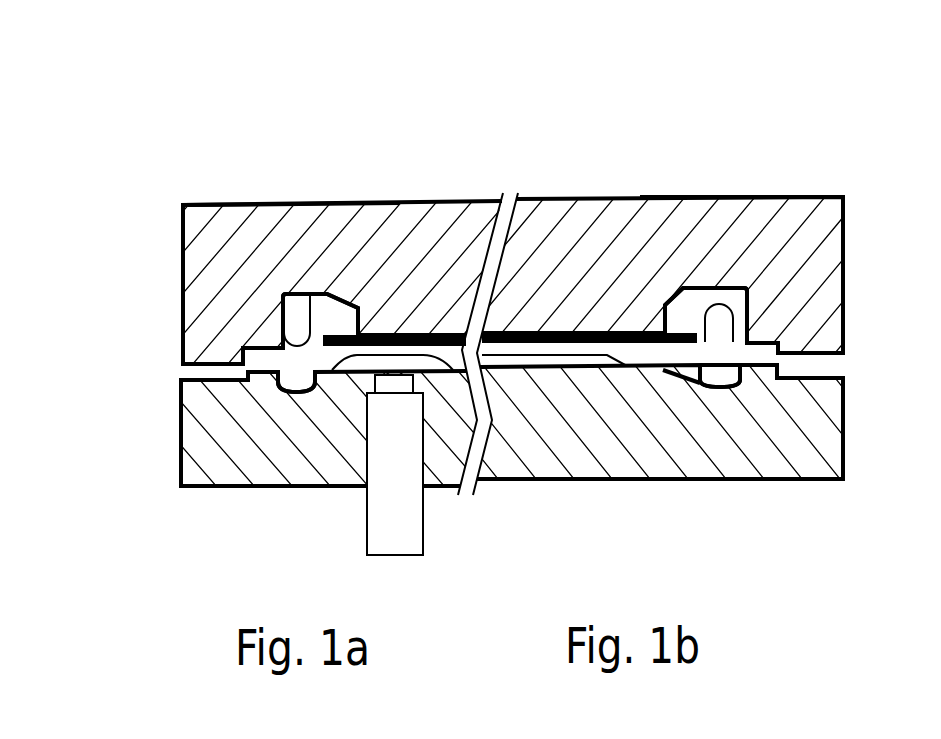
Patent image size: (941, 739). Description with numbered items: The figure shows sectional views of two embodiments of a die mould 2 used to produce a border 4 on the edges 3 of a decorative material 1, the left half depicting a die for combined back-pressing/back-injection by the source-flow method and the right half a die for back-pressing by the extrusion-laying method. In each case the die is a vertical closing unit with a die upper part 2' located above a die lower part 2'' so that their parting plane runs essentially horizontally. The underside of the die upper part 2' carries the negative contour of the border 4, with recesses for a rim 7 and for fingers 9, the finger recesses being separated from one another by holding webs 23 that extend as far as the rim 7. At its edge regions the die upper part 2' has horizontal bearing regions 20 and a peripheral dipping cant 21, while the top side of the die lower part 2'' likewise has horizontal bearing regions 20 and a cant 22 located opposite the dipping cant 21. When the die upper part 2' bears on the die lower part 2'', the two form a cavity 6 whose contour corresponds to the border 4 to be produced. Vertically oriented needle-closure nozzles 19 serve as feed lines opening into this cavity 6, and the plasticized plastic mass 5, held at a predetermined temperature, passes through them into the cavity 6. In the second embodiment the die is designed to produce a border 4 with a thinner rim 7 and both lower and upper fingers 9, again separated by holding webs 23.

In FIG. 1A, the decorative material 1 is at (470, 325).
In FIG. 1B, the decorative material 1 is at (556, 330).
In FIG. 1A, the die mould 2 is at (485, 261).
In FIG. 1A, the die upper part 2' is at (334, 241).
In FIG. 1B, the die upper part 2' is at (660, 235).
In FIG. 1A, the die lower part 2'' is at (337, 459).
In FIG. 1B, the die lower part 2'' is at (661, 364).
In FIG. 1A, the edges 3 is at (284, 293).
In FIG. 1B, the edges 3 is at (668, 302).
In FIG. 1A, the border 4 is at (279, 244).
In FIG. 1B, the border 4 is at (728, 258).
In FIG. 1A, the plasticized plastic mass 5 is at (401, 377).
In FIG. 1B, the plasticized plastic mass 5 is at (546, 362).
In FIG. 1A, the cavity 6 is at (423, 333).
In FIG. 1B, the cavity 6 is at (622, 332).
In FIG. 1A, the rim 7 is at (297, 392).
In FIG. 1B, the rim 7 is at (728, 390).
In FIG. 1A, the fingers 9 is at (342, 312).
In FIG. 1B, the fingers 9 is at (694, 300).
In FIG. 1A, the needle-closure nozzles 19 is at (405, 543).
In FIG. 1A, the horizontal bearing regions 20 is at (230, 354).
In FIG. 1B, the horizontal bearing regions 20 is at (795, 338).
In FIG. 1A, the peripheral dipping cant 21 is at (213, 357).
In FIG. 1B, the peripheral dipping cant 21 is at (800, 350).
In FIG. 1A, the cant 22 is at (253, 393).
In FIG. 1B, the cant 22 is at (790, 402).
In FIG. 1A, the holding webs 23 is at (221, 240).
In FIG. 1B, the holding webs 23 is at (812, 245).